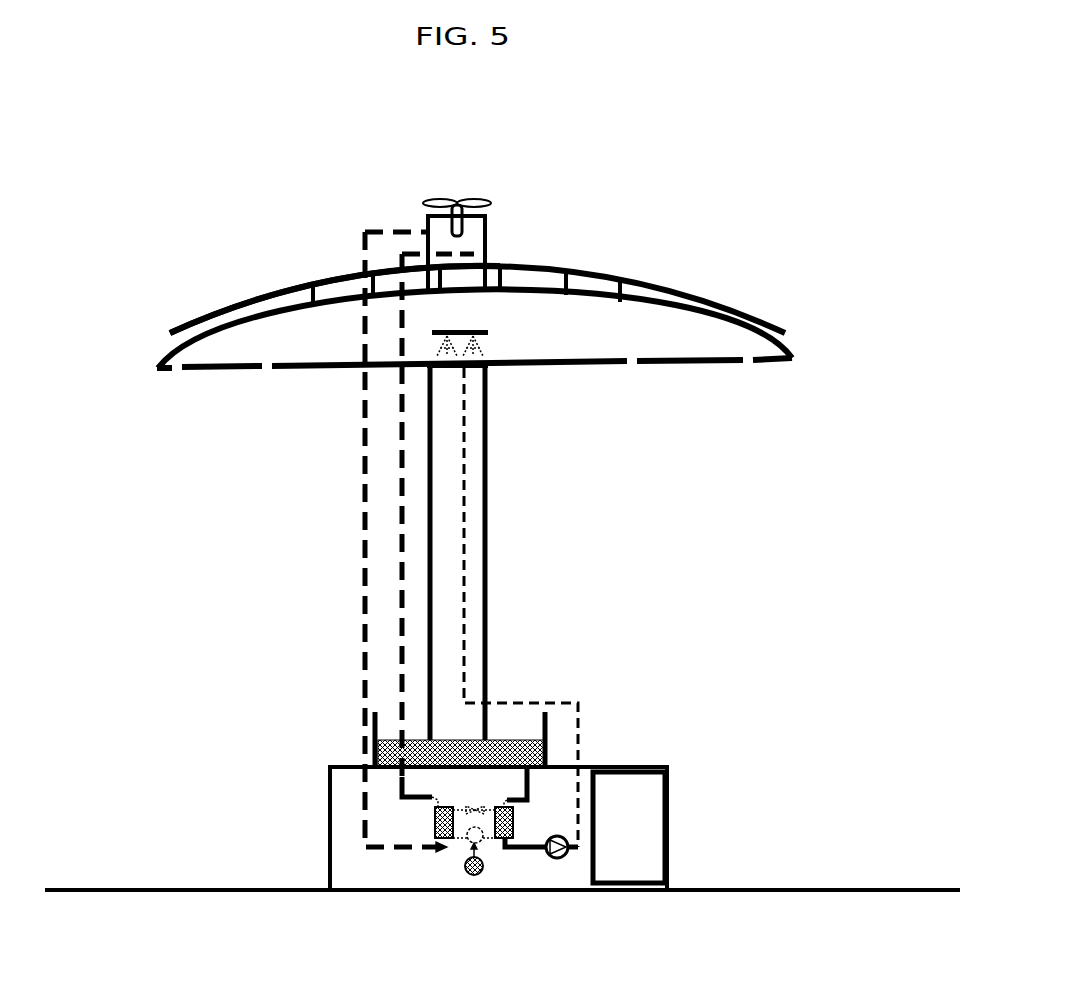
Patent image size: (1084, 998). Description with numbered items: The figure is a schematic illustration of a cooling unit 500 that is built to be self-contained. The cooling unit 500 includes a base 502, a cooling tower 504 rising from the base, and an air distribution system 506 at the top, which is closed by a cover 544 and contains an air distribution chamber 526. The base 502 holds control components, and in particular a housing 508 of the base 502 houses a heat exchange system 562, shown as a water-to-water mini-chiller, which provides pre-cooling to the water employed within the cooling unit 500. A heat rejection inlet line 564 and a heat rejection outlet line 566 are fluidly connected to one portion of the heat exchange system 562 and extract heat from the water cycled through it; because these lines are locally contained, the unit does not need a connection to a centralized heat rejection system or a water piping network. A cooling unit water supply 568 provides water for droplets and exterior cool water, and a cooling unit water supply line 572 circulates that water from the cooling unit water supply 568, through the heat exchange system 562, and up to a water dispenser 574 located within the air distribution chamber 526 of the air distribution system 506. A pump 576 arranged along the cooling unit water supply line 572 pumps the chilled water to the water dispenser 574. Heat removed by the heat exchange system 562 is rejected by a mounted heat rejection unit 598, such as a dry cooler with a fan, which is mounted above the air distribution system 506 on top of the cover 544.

The cooling unit 500 is at (889, 239).
The base 502 is at (802, 855).
The cooling tower 504 is at (617, 530).
The air distribution system 506 is at (124, 362).
The housing 508 is at (630, 768).
The air distribution chamber 526 is at (550, 347).
The cover 544 is at (250, 292).
The heat exchange system 562 is at (452, 880).
The heat rejection inlet line 564 is at (400, 540).
The heat rejection outlet line 566 is at (373, 742).
The cooling unit water supply 568 is at (512, 740).
The cooling unit water supply line 572 is at (465, 458).
The water dispenser 574 is at (488, 345).
The pump 576 is at (557, 858).
The mounted heat rejection unit 598 is at (490, 241).